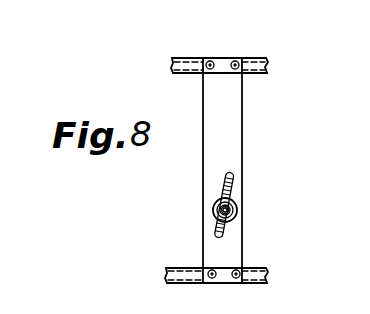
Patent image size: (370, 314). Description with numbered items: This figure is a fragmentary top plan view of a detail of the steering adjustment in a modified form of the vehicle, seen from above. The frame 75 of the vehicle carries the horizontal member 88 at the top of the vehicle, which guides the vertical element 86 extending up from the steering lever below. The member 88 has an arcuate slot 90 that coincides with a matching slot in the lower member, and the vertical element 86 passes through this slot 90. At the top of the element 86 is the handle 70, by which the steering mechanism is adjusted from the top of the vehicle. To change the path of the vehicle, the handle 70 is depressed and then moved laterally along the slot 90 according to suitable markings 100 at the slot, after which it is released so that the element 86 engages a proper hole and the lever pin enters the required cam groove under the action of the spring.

The frame 75 is at (255, 57).
The horizontal member 88 is at (242, 130).
The arcuate slot 90 is at (234, 183).
The markings 100 is at (221, 194).
The handle 70 is at (238, 212).
The vertical element 86 is at (214, 215).